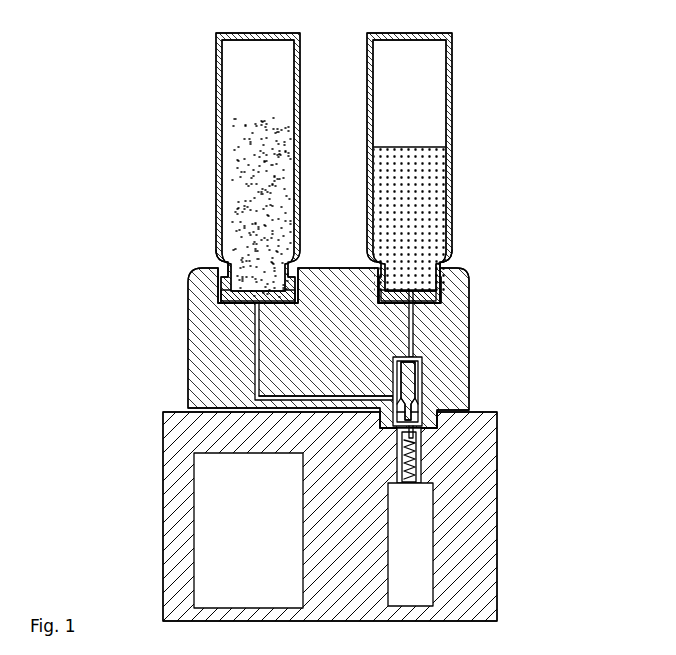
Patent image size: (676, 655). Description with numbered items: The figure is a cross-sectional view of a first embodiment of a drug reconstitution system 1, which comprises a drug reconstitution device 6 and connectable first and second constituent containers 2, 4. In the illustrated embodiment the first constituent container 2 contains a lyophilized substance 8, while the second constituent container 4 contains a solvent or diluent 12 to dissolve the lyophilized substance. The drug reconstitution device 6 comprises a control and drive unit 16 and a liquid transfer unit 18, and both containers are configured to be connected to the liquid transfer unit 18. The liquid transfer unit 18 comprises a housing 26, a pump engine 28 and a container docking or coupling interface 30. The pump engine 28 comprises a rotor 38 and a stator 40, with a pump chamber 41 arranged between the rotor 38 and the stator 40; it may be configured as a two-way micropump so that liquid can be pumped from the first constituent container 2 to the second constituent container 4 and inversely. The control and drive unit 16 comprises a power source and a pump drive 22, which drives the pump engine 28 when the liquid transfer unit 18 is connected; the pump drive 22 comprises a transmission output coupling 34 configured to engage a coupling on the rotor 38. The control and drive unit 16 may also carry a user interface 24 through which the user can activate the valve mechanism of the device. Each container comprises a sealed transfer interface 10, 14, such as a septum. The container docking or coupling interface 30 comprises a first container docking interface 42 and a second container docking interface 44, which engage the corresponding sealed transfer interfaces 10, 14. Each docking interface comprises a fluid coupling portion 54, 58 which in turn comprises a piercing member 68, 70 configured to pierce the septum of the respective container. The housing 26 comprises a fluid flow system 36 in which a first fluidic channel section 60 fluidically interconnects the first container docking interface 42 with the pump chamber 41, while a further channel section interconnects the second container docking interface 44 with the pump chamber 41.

The drug reconstitution system 1 is at (608, 292).
The first constituent container 2 is at (207, 118).
The second constituent container 4 is at (466, 114).
The drug reconstitution device 6 is at (540, 382).
The powder component 8 is at (283, 110).
The sealed transfer interface 10 is at (297, 280).
The cartridge 12 is at (435, 90).
The sealed transfer interface 14 is at (410, 275).
The control and drive unit 16 is at (505, 512).
The liquid transfer unit 18 is at (480, 323).
The pump drive 22 is at (447, 533).
The user interface 24 is at (210, 533).
The housing 26 is at (468, 268).
The pump engine 28 is at (443, 387).
The container docking or coupling interface 30 is at (216, 252).
The transmission output coupling 34 is at (425, 435).
The fluid flow system 36 is at (222, 388).
The rotor 38 is at (423, 392).
The stator 40 is at (440, 413).
The pump chamber 41 is at (437, 391).
The first container docking interface 42 is at (210, 305).
The second container docking interface 44 is at (445, 277).
The fluid coupling portion 54 is at (256, 332).
The fluid coupling portion 58 is at (420, 313).
The first fluidic channel section 60 is at (288, 400).
The piercing member 68 is at (256, 278).
The piercing member 70 is at (420, 275).